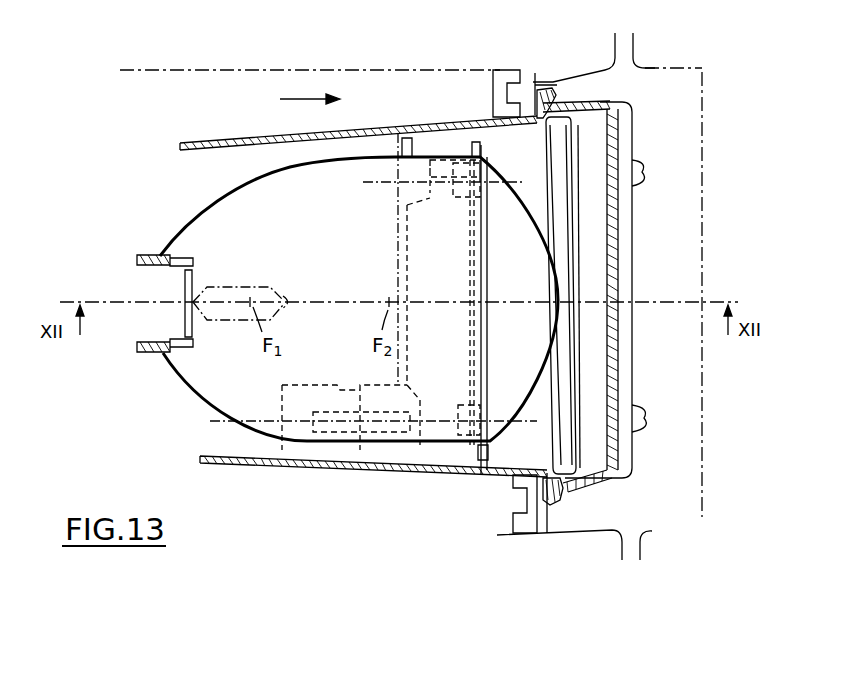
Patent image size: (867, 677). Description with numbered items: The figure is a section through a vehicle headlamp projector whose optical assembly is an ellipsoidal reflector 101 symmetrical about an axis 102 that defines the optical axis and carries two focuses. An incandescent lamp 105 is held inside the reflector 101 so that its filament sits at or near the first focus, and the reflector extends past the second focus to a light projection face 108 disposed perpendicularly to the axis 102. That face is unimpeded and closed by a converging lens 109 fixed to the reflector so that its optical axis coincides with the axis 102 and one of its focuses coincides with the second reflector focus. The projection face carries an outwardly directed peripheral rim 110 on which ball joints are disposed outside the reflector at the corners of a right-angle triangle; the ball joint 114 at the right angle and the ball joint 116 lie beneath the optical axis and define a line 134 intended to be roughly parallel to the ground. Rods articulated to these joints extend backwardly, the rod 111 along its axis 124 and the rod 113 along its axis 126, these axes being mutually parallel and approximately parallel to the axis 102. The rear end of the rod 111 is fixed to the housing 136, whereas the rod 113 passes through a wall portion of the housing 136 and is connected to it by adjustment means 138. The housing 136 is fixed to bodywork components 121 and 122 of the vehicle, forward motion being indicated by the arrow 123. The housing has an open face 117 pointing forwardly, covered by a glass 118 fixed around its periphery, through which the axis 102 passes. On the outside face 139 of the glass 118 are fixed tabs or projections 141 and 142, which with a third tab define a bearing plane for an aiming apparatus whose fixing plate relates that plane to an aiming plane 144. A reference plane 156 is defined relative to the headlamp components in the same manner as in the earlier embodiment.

The reference plane 156 is at (150, 70).
The housing 136 is at (227, 137).
The arrow 123 is at (290, 99).
The rod 111 is at (437, 153).
The bodywork component 121 is at (467, 133).
The ball joint 114 is at (484, 158).
The axis 124 is at (390, 183).
The converging lens 109 is at (527, 233).
The tab or projection 141 is at (640, 167).
The outside face of the glass 139 is at (630, 250).
The glass 118 is at (632, 330).
The incandescent lamp 105 is at (256, 286).
The axis 102 is at (340, 300).
The line 134 is at (470, 282).
The light projection face 108 is at (487, 258).
The ball joint 116 is at (486, 412).
The open face 117 is at (580, 377).
The peripheral rim 110 is at (492, 445).
The axis 126 is at (297, 420).
The reflector 101 is at (213, 409).
The adjustment means 138 is at (308, 466).
The rod 113 is at (443, 443).
The bodywork component 122 is at (523, 491).
The tab or projection 142 is at (646, 428).
The aiming plane 144 is at (703, 490).